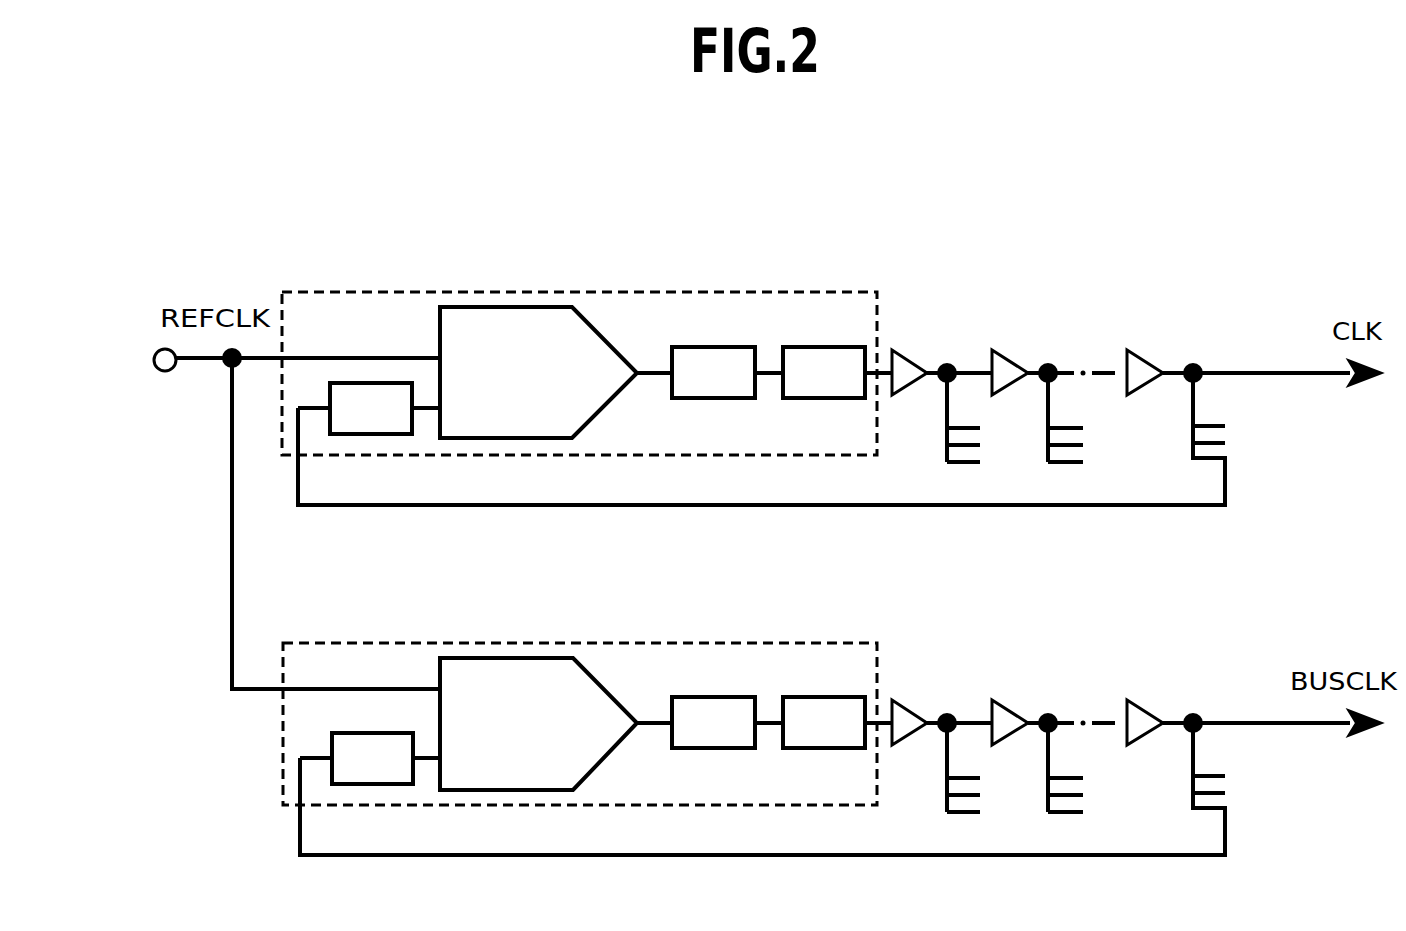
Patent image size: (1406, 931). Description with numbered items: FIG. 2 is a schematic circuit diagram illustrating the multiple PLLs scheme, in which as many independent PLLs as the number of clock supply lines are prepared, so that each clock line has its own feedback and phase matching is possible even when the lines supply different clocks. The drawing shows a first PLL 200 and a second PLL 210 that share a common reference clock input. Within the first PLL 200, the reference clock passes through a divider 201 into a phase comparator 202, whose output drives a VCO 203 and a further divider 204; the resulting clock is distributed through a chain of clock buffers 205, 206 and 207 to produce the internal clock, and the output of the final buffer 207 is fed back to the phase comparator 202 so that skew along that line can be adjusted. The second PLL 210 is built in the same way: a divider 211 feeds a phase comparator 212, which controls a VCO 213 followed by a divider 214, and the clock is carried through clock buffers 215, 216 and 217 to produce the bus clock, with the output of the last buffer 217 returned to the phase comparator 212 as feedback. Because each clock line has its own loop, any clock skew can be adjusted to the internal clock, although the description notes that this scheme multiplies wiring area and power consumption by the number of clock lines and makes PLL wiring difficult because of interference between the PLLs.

The first PLL circuit (PLL1) 200 is at (317, 293).
The 1/Km frequency divider 201 is at (363, 383).
The phase comparator 202 is at (477, 307).
The VCO 203 is at (707, 347).
The 1/m frequency divider 204 is at (815, 347).
The clock buffer 205 is at (907, 353).
The clock buffer 206 is at (1013, 352).
The clock buffer 207 is at (1147, 352).
The second PLL circuit (PLL2) 210 is at (315, 644).
The 1/Kn frequency divider 211 is at (367, 733).
The phase comparator 212 is at (475, 658).
The VCO 213 is at (707, 697).
The 1/n frequency divider 214 is at (815, 697).
The clock buffer 215 is at (907, 703).
The clock buffer 216 is at (1013, 702).
The clock buffer 217 is at (1147, 702).